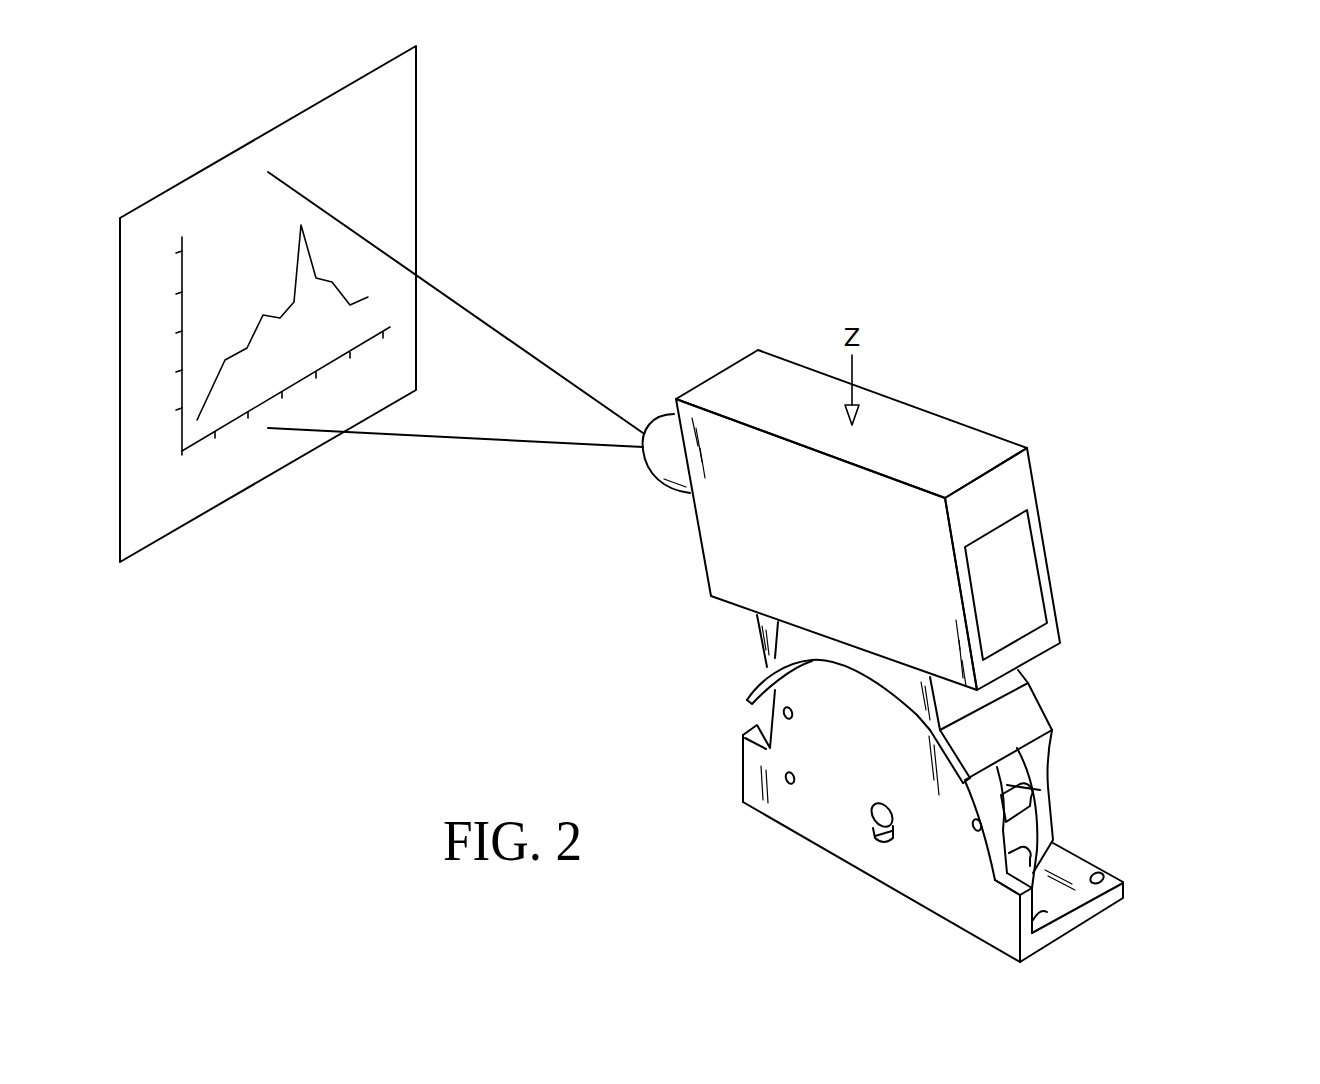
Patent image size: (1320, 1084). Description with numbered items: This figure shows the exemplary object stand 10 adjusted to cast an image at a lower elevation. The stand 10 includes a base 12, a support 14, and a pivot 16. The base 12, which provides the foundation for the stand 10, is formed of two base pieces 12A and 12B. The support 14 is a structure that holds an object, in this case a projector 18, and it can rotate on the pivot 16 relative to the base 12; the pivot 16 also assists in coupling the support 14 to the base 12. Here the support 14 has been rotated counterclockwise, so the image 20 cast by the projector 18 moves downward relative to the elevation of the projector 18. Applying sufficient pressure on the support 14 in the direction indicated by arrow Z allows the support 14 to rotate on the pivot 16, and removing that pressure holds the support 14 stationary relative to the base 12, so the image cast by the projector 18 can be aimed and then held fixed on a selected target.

The stand 10 is at (1194, 716).
The base 12 is at (1092, 845).
The base piece 12A is at (1045, 807).
The base piece 12B is at (750, 793).
The support 14 is at (778, 657).
The pivot 16 is at (856, 815).
The projector 18 is at (1017, 485).
The image 20 is at (190, 427).